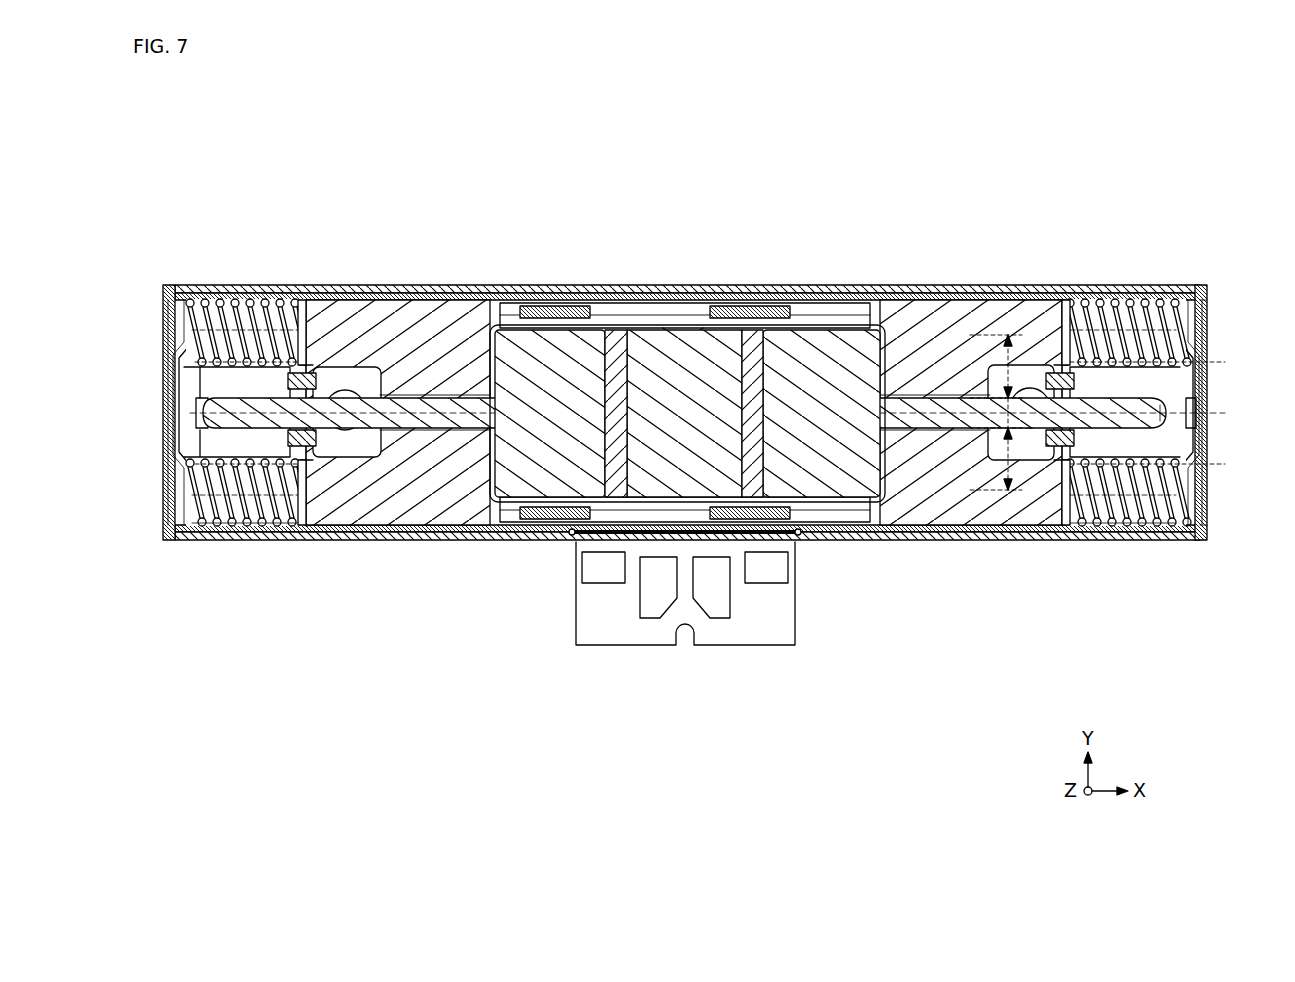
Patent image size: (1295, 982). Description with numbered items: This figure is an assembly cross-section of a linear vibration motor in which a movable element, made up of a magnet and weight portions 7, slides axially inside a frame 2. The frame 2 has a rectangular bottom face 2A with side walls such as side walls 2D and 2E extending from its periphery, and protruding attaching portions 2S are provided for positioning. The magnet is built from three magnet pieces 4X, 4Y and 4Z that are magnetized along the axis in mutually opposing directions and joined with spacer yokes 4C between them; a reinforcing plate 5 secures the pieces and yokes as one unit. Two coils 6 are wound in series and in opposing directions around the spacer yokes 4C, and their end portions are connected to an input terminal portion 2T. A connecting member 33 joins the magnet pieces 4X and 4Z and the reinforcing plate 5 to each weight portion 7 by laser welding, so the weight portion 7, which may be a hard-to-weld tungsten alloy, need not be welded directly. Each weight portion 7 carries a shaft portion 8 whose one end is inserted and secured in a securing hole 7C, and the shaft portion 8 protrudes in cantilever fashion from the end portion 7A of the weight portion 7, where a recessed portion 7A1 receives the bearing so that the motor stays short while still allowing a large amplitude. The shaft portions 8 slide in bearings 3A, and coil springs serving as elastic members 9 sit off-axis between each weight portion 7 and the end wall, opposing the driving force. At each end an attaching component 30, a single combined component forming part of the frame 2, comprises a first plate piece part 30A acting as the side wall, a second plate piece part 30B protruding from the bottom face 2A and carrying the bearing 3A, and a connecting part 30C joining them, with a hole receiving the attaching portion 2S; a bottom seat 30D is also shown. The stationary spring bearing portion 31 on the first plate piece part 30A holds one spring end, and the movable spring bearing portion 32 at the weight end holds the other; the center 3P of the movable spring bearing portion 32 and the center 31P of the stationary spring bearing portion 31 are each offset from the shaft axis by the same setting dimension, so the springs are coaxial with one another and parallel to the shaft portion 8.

The frame 2 is at (497, 540).
The bottom face 2A is at (362, 300).
The side wall 2D is at (983, 540).
The side wall 2E is at (1008, 300).
The attaching portion 2S is at (200, 540).
The input terminal portion 2T is at (620, 645).
The bearing 3A is at (276, 540).
The center of movable spring bearing portion 3P is at (1212, 420).
The magnet piece 4X is at (553, 303).
The magnet piece 4Y is at (683, 303).
The magnet piece 4Z is at (815, 303).
The spacer yoke 4C is at (600, 303).
The reinforcing plate 5 is at (840, 303).
The coil 6 is at (570, 545).
The weight portion 7 is at (406, 540).
The end portion of weight portion 7A is at (314, 300).
The recessed portion 7A1 is at (398, 300).
The securing hole 7C is at (452, 540).
The shaft portion 8 is at (432, 300).
The elastic member 9 is at (250, 300).
The attaching component 30 is at (163, 390).
The first plate piece part 30A is at (168, 285).
The second plate piece part 30B is at (295, 300).
The connecting part 30C is at (222, 300).
The spring seat 30D is at (209, 540).
The stationary spring bearing portion 31 is at (190, 300).
The center of stationary spring bearing portion 31P is at (1208, 330).
The movable spring bearing portion 32 is at (268, 300).
The connecting member 33 is at (505, 303).